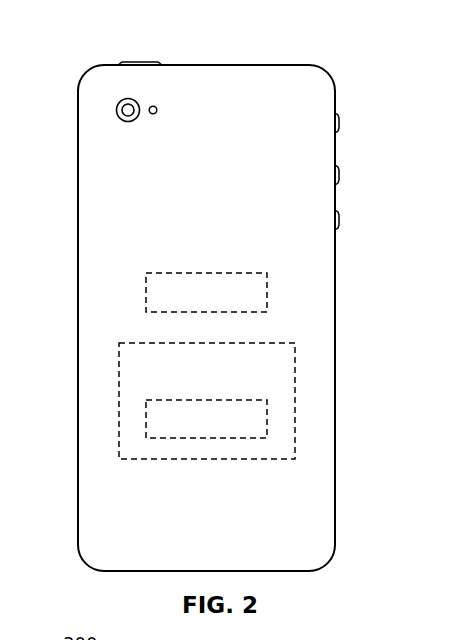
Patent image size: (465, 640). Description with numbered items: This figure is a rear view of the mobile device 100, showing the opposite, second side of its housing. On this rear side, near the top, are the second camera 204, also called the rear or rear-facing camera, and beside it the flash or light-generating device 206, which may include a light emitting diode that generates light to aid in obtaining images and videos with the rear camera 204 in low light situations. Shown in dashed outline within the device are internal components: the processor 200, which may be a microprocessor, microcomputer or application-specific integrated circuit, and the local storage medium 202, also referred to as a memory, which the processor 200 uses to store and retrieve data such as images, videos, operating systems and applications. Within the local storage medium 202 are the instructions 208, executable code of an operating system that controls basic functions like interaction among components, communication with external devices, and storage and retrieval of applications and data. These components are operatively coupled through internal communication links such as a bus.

The mobile device 100 is at (333, 60).
The processor 200 is at (218, 273).
The local storage medium 202 is at (295, 357).
The second camera 204 is at (116, 110).
The light-generating device 206 is at (153, 105).
The instructions 208 is at (267, 417).